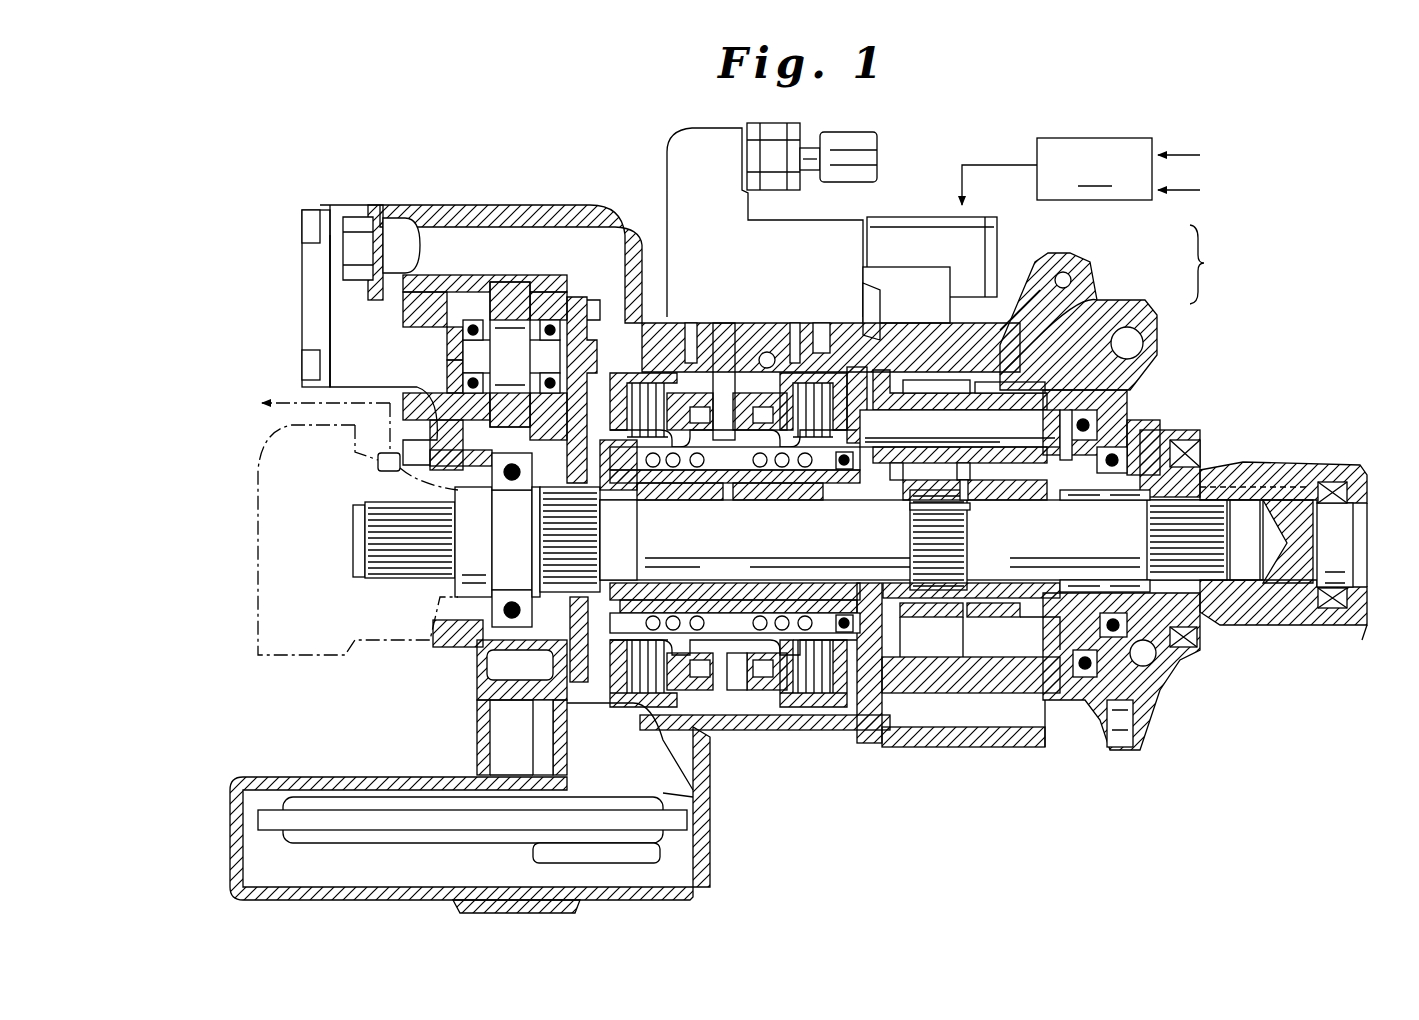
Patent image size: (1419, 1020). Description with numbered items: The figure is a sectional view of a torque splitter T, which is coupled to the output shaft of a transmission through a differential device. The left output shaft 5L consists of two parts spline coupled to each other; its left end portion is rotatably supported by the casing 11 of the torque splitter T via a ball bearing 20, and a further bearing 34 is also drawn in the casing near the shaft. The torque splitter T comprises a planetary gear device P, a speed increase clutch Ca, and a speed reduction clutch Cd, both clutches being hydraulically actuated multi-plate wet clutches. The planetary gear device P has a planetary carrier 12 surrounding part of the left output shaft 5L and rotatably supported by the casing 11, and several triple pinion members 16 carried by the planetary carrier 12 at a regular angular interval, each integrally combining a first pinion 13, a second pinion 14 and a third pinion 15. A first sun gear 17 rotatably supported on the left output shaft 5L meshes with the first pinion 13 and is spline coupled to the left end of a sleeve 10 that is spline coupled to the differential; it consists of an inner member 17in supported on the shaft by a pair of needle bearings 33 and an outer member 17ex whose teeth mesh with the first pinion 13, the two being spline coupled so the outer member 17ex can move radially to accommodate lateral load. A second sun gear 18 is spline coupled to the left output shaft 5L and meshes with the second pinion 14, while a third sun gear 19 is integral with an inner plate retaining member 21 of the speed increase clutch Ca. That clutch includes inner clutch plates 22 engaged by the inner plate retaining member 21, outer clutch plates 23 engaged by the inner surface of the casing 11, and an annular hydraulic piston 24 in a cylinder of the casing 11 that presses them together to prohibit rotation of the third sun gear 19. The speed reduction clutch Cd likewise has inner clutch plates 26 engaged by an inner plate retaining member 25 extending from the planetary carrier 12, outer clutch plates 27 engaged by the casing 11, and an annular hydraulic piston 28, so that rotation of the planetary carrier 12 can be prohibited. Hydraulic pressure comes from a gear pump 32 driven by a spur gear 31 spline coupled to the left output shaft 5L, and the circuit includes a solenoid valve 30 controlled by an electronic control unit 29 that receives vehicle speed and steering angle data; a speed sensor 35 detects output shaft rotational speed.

The sleeve 10 is at (1292, 470).
The casing 11 is at (1082, 700).
The planetary carrier 12 is at (1028, 700).
The first pinion 13 is at (1025, 390).
The second pinion 14 is at (1000, 353).
The third pinion 15 is at (1000, 320).
The triple pinion member 16 is at (1213, 264).
The first sun gear 17 is at (1092, 830).
The outer member 17ex is at (985, 620).
The inner member 17in is at (1078, 617).
The second sun gear 18 is at (940, 617).
The third sun gear 19 is at (880, 600).
The ball bearing 20 is at (470, 808).
The inner plate retaining member 21 is at (613, 623).
The inner clutch plates 22 is at (633, 667).
The outer clutch plates 23 is at (613, 620).
The annular hydraulic piston 24 is at (660, 657).
The inner plate retaining member 25 is at (853, 400).
The inner clutch plates 26 is at (843, 380).
The outer clutch plates 27 is at (807, 380).
The annular hydraulic piston 28 is at (763, 397).
The electronic control unit 29 is at (702, 294).
The solenoid valve 30 is at (983, 222).
The spur gear 31 is at (597, 400).
The gear pump 32 is at (513, 290).
The needle bearings 33 is at (1137, 487).
The bearing 34 is at (1020, 477).
The speed sensor 35 is at (378, 462).
The left output shaft 5L is at (1217, 577).
The speed increase clutch Ca is at (640, 712).
The speed reduction clutch Cd is at (813, 712).
The planetary gear device P is at (1050, 392).
The torque splitter T is at (620, 192).